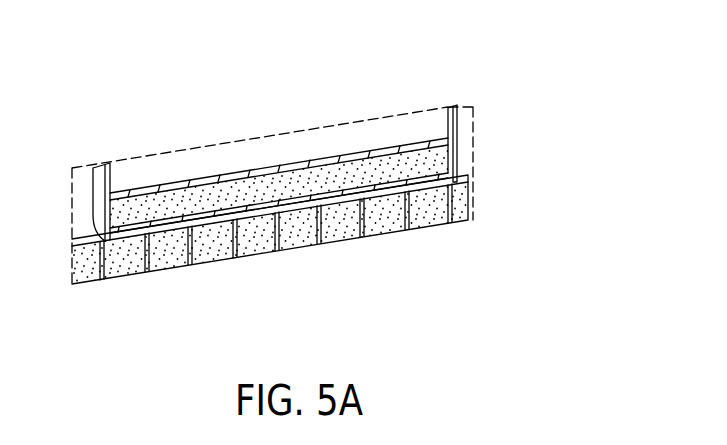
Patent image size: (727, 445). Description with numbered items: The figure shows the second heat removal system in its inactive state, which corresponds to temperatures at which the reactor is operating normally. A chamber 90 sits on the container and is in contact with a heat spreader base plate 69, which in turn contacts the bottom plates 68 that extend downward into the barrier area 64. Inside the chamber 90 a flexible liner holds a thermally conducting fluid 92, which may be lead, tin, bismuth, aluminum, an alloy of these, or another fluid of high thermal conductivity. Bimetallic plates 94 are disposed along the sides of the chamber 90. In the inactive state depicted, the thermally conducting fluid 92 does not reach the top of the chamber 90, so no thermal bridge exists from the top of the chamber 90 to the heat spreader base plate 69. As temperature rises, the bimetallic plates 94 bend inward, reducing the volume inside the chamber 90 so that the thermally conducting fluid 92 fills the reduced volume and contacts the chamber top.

The barrier area 64 is at (462, 205).
The bottom plates 68 is at (189, 270).
The heat spreader base plate 69 is at (460, 183).
The chamber 90 is at (457, 151).
The thermally conducting fluid 92 is at (320, 183).
The bimetallic plates 94 is at (108, 205).